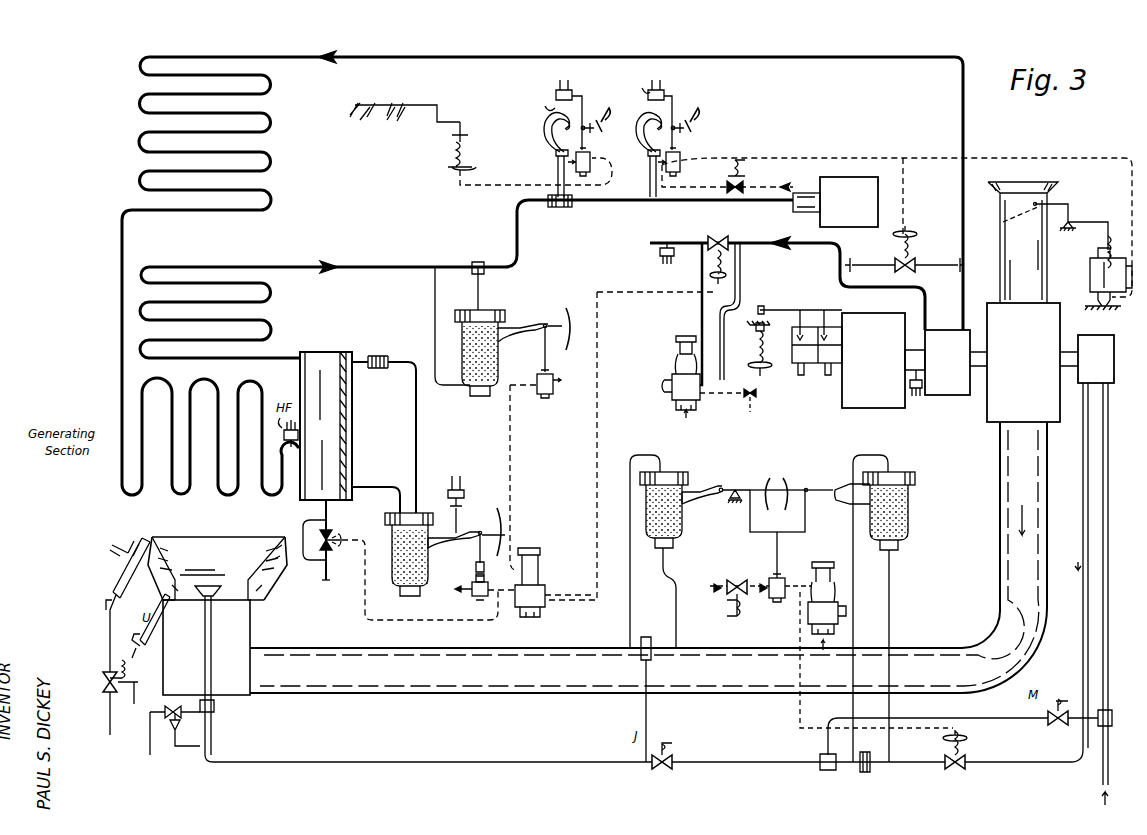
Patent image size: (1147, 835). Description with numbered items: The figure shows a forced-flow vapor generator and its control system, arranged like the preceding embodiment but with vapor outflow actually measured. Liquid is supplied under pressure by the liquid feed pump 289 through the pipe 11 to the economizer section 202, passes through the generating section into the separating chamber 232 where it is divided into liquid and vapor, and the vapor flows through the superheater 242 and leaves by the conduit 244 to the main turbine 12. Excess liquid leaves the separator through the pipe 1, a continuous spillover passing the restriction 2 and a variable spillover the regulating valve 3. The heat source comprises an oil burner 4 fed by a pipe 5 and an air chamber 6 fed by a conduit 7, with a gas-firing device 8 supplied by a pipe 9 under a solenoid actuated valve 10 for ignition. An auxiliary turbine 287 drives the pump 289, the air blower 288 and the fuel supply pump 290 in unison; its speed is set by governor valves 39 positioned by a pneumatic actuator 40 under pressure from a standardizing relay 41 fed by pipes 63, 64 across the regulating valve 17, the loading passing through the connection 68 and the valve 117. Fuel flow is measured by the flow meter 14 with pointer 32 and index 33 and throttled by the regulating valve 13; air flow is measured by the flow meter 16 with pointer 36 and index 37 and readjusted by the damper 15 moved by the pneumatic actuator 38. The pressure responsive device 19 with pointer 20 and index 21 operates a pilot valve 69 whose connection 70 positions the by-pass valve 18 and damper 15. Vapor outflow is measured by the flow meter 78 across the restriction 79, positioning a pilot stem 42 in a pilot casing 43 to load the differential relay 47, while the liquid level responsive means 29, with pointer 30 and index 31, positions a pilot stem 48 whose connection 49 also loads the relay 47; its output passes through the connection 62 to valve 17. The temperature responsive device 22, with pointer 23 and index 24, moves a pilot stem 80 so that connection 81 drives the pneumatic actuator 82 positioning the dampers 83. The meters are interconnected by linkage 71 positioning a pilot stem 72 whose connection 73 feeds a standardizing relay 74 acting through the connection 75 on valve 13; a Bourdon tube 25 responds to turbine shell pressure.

The pipe 1 is at (320, 577).
The restriction 2 is at (302, 522).
The regulating valve 3 is at (338, 530).
The oil burner 4 is at (212, 622).
The pipe 5 is at (312, 760).
The air chamber 6 is at (250, 616).
The conduit 7 is at (326, 645).
The gas-firing device 8 is at (120, 564).
The pipe 9 is at (104, 628).
The solenoid actuated valve 10 is at (102, 674).
The pipe 11 is at (482, 60).
The main turbine 12 is at (820, 218).
The regulating valve 13 is at (955, 771).
The flow meter 14 is at (912, 492).
The damper 15 is at (1008, 216).
The flow meter 16 is at (682, 460).
The regulating valve 17 is at (706, 232).
The regulating valve 18 is at (908, 270).
The pressure responsive device 19 is at (636, 152).
The indicator pointer 20 is at (682, 106).
The index 21 is at (700, 118).
The temperature responsive device 22 is at (540, 136).
The indicator pointer 23 is at (598, 133).
The index 24 is at (598, 108).
The Bourdon tube 25 is at (560, 201).
The liquid level responsive means 29 is at (430, 585).
The pointer 30 is at (484, 514).
The index 31 is at (510, 527).
The pointer 32 is at (798, 482).
The index 33 is at (784, 475).
The pointer 36 is at (752, 488).
The index 37 is at (774, 472).
The pneumatic actuator 38 is at (1088, 278).
The governor valves 39 is at (808, 310).
The pneumatic actuator 40 is at (768, 376).
The standardizing relay 41 is at (672, 354).
The pilot stem 42 is at (540, 338).
The pilot casing 43 is at (556, 392).
The differential relay 47 is at (540, 575).
The pilot stem 48 is at (476, 540).
The connection 49 is at (512, 615).
The connection 62 is at (597, 410).
The pipe 63 is at (696, 318).
The pipe 64 is at (742, 268).
The connection 68 is at (712, 396).
The pilot valve 69 is at (680, 140).
The connection 70 is at (800, 156).
The linkage 71 is at (780, 538).
The pilot stem 72 is at (770, 538).
The connection 73 is at (800, 594).
The standardizing relay 74 is at (823, 562).
The connection 75 is at (794, 640).
The flow meter 78 is at (505, 310).
The restriction 79 is at (466, 260).
The pilot stem 80 is at (576, 150).
The connection 81 is at (490, 173).
The pneumatic actuator 82 is at (454, 168).
The dampers 83 is at (372, 120).
The valve 117 is at (759, 401).
The economizer section 202 is at (487, 273).
The separating chamber 232 is at (352, 418).
The superheater 242 is at (154, 312).
The conduit 244 is at (396, 261).
The auxiliary turbine 287 is at (855, 408).
The air blower 288 is at (984, 424).
The liquid feed pump 289 is at (930, 400).
The fuel supply pump 290 is at (1110, 320).